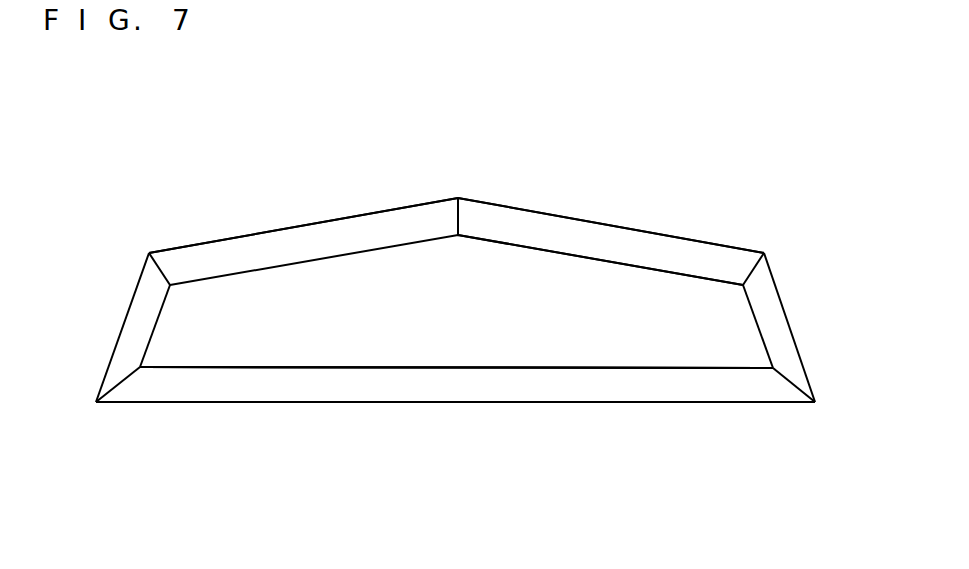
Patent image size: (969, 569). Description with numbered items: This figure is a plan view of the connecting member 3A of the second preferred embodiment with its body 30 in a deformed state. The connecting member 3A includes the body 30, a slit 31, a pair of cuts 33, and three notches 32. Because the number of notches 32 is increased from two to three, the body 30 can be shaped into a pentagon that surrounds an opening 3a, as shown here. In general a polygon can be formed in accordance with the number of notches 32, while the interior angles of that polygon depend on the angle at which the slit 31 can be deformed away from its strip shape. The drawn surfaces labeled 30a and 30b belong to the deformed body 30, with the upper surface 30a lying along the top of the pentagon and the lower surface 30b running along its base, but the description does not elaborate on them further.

The connecting member 3A is at (226, 160).
The opening 3a is at (457, 367).
The body 30 is at (639, 230).
The upper surface 30a is at (352, 233).
The lower surface 30b is at (332, 385).
The slit 31 is at (537, 247).
The notch 32 is at (160, 268).
The cut 33 is at (752, 268).